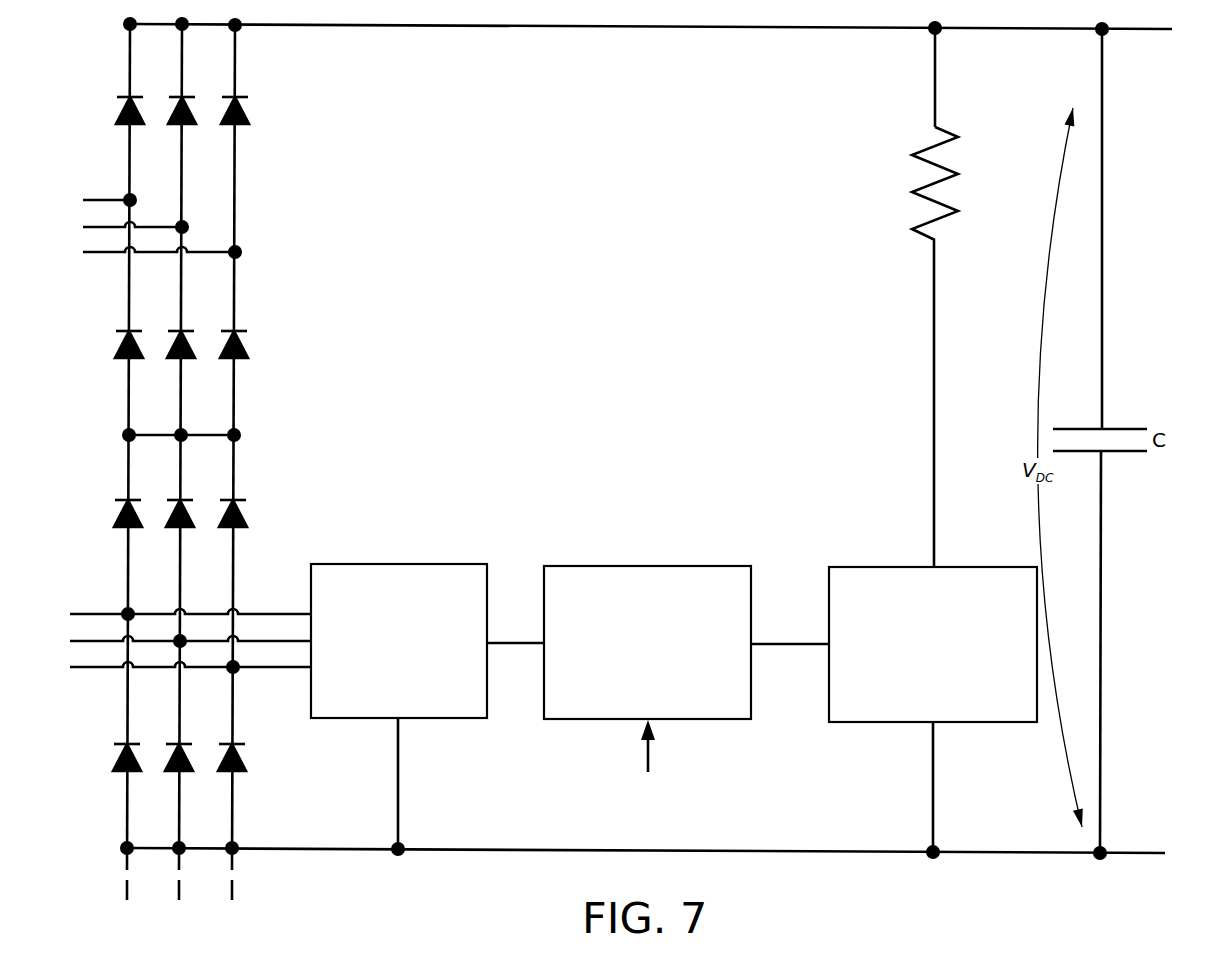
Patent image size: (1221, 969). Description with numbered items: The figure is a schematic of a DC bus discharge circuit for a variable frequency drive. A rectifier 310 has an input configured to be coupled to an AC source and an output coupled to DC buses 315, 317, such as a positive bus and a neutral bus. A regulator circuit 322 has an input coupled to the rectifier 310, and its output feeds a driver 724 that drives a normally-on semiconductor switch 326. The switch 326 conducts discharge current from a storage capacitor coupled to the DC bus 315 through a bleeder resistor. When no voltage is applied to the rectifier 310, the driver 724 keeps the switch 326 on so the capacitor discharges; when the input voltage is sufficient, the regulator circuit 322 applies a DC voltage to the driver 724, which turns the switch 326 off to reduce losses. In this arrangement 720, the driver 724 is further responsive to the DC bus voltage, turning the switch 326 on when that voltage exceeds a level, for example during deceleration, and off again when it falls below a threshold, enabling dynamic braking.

The rectifier 310 is at (290, 268).
The DC bus 315 is at (390, 25).
The DC bus 317 is at (293, 848).
The regulator circuit 322 is at (427, 706).
The driver 724 is at (686, 684).
The normally-on semiconductor switch 326 is at (933, 546).
The discharge circuit 720 is at (448, 448).